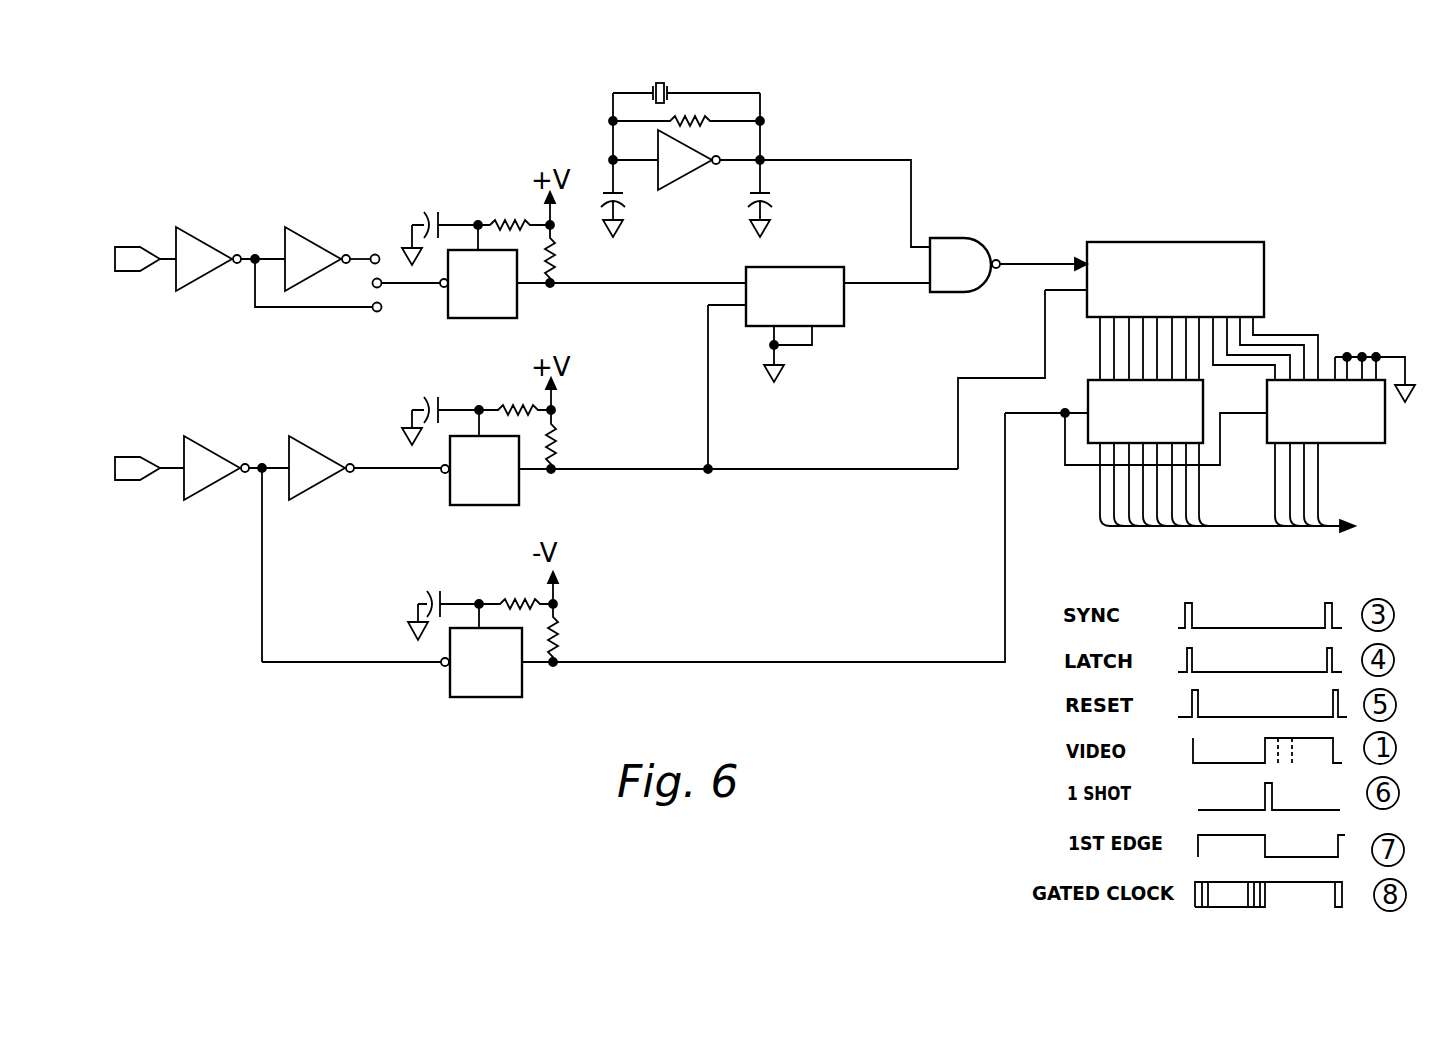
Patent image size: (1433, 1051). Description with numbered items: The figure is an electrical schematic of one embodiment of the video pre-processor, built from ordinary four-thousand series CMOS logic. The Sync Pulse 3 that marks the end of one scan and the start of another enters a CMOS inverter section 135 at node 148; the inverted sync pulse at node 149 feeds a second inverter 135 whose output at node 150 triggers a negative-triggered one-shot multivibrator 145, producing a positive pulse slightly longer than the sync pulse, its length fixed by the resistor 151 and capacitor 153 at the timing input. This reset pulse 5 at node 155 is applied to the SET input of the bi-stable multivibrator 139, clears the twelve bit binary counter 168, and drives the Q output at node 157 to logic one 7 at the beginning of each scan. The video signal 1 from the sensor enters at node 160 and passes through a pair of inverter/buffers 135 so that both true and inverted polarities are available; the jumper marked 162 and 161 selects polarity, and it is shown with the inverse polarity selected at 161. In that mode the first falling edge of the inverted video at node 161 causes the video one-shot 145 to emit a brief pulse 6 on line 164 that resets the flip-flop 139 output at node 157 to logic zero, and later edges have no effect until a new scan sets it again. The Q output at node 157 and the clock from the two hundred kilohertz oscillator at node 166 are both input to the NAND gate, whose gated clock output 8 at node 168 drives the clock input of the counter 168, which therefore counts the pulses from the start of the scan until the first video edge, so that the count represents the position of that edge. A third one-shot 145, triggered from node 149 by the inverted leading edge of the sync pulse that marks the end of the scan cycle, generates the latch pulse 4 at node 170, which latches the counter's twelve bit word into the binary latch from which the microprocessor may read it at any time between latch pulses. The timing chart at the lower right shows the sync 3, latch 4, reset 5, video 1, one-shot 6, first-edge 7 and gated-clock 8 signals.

The video signal 1 is at (133, 246).
The sync pulse 3 is at (134, 456).
The latch pulse 4 is at (613, 661).
The reset pulse 5 is at (798, 469).
The one shot pulse 6 is at (607, 285).
The first edge signal 7 is at (918, 285).
The gated clock 8 is at (1025, 265).
The CMOS buffer/inverter section 135 is at (300, 256).
The bi-stable multivibrator 139 is at (778, 277).
The one-shot multivibrator 145 is at (506, 294).
The sync pulse input node 148 is at (141, 482).
The inverted sync pulse node 149 is at (253, 486).
The second inverter output node 150 is at (393, 477).
The resistor 151 is at (518, 404).
The capacitor 153 is at (428, 405).
The reset pulse node 155 is at (628, 469).
The Q output node 157 is at (887, 282).
The video signal input node 160 is at (138, 272).
The inverse polarity jumper position 161 is at (372, 313).
The true polarity jumper position 162 is at (372, 254).
The video one shot output line 164 is at (683, 283).
The oscillator clock node 166 is at (853, 159).
The NAND gate output node 168 is at (1058, 263).
The latch pulse node 170 is at (692, 662).